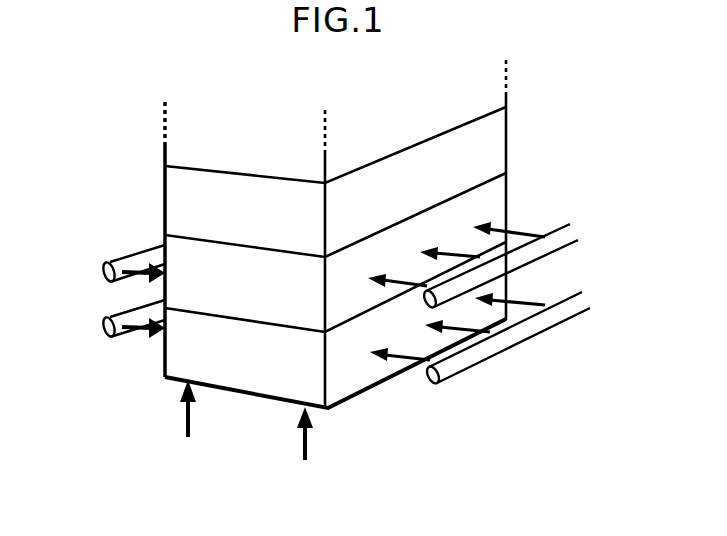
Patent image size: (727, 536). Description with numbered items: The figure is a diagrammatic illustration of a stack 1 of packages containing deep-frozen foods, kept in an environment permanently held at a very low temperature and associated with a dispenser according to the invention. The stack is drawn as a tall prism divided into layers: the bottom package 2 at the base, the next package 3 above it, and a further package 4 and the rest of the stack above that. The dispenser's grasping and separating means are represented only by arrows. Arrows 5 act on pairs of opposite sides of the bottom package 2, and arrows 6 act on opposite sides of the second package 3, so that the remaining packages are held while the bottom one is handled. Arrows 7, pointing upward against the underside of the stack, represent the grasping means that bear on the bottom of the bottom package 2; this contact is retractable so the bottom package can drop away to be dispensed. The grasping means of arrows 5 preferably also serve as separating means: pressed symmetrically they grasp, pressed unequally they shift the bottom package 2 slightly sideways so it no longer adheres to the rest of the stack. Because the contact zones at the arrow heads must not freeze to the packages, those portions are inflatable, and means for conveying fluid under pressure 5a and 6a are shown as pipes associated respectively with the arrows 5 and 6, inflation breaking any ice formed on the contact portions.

The stack 1 is at (507, 134).
The bottom package 2 is at (340, 378).
The package 3 is at (490, 210).
The package 4 is at (490, 169).
The arrows 5 is at (150, 337).
The means for conveying fluid under pressure 5a is at (107, 317).
The arrows 6 is at (150, 276).
The means for conveying fluid under pressure 6a is at (146, 255).
The arrows 7 is at (190, 410).